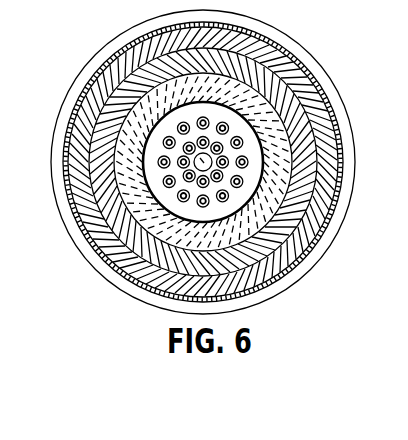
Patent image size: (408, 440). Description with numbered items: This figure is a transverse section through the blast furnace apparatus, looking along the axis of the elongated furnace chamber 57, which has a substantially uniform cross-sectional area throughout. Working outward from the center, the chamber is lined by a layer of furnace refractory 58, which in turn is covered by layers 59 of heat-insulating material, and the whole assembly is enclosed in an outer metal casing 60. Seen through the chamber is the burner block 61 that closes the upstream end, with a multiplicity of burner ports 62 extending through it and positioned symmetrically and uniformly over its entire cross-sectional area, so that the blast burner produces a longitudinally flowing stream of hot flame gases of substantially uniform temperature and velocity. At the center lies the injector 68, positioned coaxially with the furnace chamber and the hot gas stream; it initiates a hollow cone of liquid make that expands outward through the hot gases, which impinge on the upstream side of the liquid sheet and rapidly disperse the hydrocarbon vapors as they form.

The furnace chamber 57 is at (272, 206).
The furnace refractory 58 is at (300, 204).
The layers of heat-insulating material 59 is at (334, 204).
The outer metal casing 60 is at (322, 179).
The burner block 61 is at (237, 181).
The burner ports 62 is at (242, 162).
The injector 68 is at (204, 162).